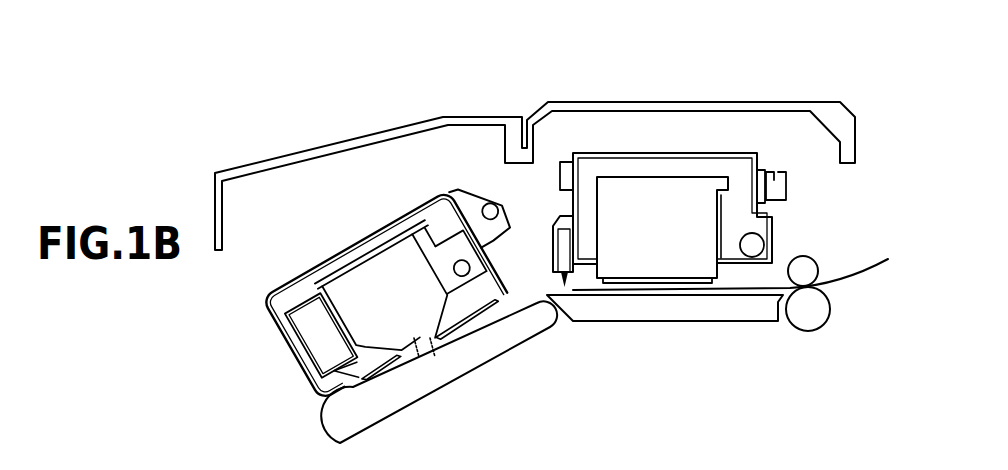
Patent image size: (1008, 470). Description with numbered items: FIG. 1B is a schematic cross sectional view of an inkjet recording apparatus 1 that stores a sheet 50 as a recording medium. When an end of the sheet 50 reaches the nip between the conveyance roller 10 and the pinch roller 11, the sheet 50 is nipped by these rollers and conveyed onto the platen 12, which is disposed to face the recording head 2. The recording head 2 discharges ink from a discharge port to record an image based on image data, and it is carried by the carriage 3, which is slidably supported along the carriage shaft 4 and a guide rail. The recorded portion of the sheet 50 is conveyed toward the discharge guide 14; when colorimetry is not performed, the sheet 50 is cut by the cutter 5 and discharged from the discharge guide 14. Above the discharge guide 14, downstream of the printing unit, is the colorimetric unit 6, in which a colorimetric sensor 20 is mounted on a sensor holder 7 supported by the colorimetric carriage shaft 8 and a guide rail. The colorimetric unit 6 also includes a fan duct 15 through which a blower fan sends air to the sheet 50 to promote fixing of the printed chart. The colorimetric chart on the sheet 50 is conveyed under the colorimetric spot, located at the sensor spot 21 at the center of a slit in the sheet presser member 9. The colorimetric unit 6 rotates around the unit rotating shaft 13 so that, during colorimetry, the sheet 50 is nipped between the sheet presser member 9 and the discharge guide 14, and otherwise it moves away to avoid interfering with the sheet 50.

The printer 1 is at (709, 87).
The recording head 2 is at (672, 182).
The carriage 3 is at (713, 154).
The carriage shaft 4 is at (758, 245).
The cutter 5 is at (556, 226).
The colorimetric unit 6 is at (347, 250).
The sensor holder 7 is at (430, 222).
The colorimetric carriage shaft 8 is at (467, 268).
The sheet presser member 9 is at (470, 323).
The conveyance roller 10 is at (808, 319).
The pinch roller 11 is at (806, 266).
The platen 12 is at (680, 322).
The unit rotating shaft 13 is at (490, 206).
The discharge guide 14 is at (508, 348).
The fan duct 15 is at (296, 300).
The colorimetric sensor 20 is at (386, 262).
The sensor spot 21 is at (428, 358).
The sheet 50 is at (869, 266).